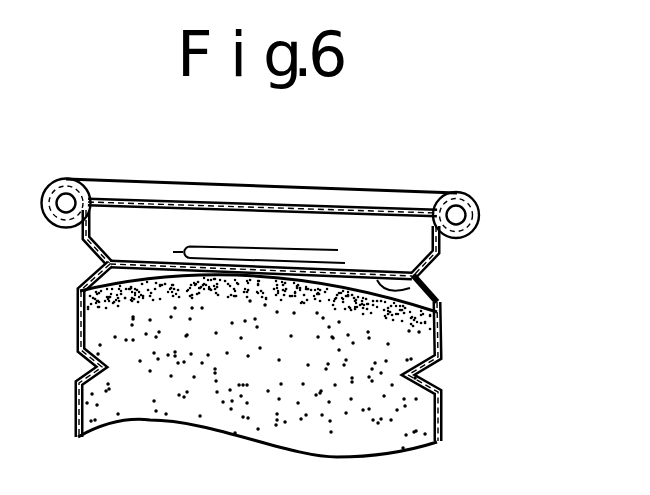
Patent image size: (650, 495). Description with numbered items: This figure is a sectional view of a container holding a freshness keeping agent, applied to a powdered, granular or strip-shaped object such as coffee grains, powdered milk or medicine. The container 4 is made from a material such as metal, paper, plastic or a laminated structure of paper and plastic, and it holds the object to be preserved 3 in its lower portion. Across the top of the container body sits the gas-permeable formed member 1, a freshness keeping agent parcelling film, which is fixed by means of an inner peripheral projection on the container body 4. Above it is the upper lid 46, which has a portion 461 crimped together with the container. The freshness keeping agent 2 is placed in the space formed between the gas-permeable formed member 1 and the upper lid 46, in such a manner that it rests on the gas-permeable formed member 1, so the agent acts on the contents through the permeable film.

The upper lid 46 is at (380, 207).
The crimped portion 461 is at (480, 216).
The freshness keeping agent 2 is at (328, 256).
The gas-permeable formed member 1 is at (427, 285).
The container 4 is at (438, 387).
The object to be preserved 3 is at (397, 421).